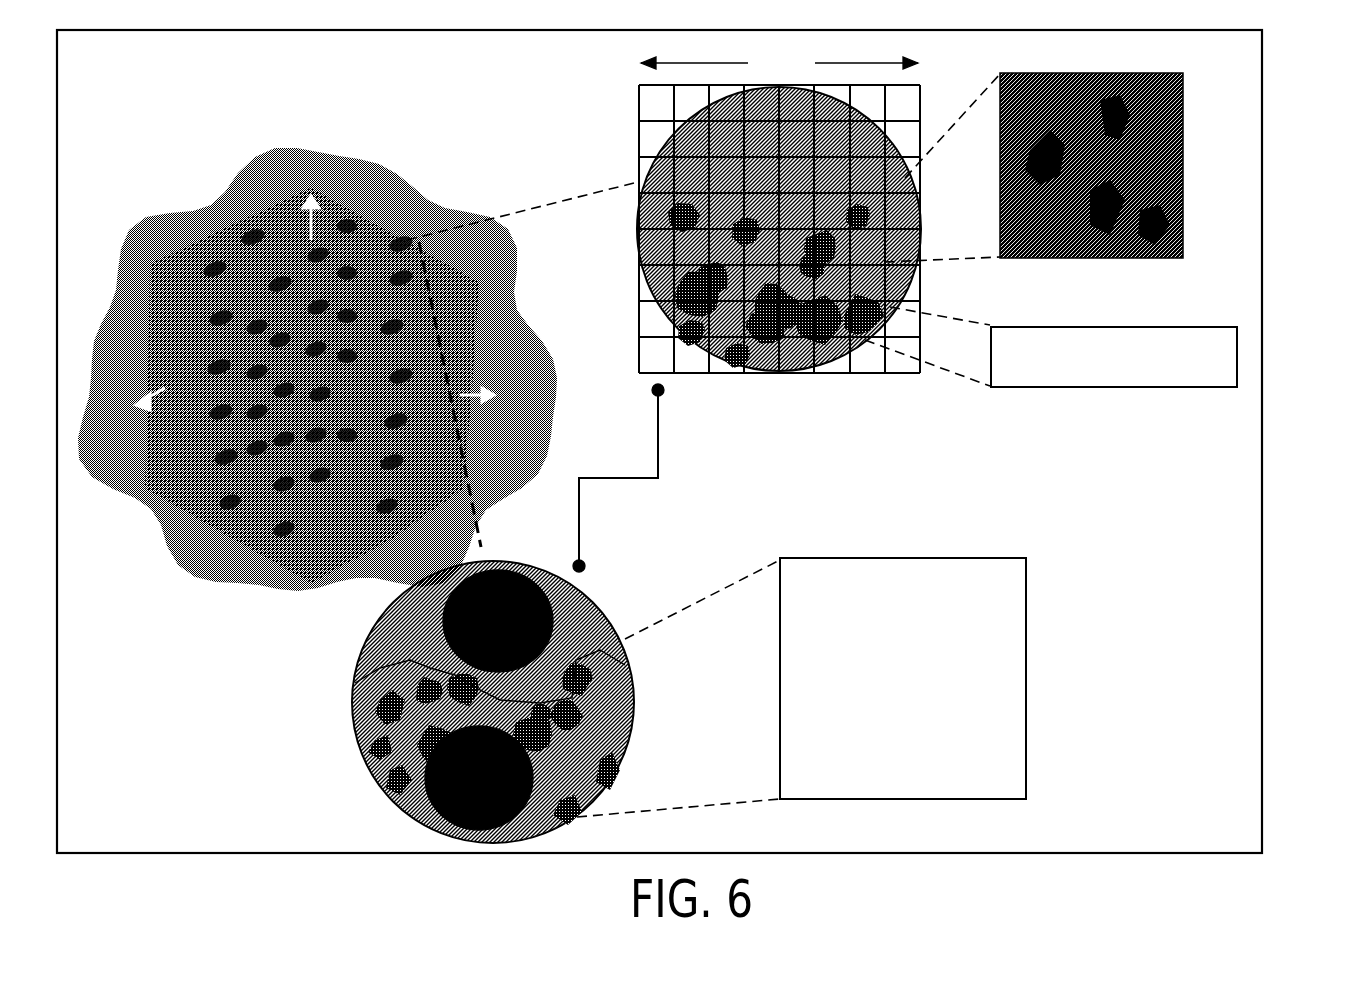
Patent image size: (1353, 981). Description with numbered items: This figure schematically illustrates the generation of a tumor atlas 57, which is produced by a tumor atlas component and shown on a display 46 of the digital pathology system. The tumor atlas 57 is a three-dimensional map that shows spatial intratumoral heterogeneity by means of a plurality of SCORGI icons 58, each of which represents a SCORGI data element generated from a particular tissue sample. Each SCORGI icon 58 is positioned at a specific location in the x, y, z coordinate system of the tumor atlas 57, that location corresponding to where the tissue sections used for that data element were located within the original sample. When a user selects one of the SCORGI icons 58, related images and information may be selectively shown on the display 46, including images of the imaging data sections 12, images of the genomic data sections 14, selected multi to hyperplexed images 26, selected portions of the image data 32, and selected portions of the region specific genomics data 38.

The imaging data sections 12 is at (795, 370).
The genomic data sections 14 is at (350, 707).
The multi to hyperplexed images 26 is at (1185, 100).
The image data 32 is at (1178, 327).
The region specific genomics data 38 is at (1007, 558).
The display 46 is at (1262, 522).
The tumor atlas 57 is at (317, 324).
The SCORGI icons 58 is at (221, 271).